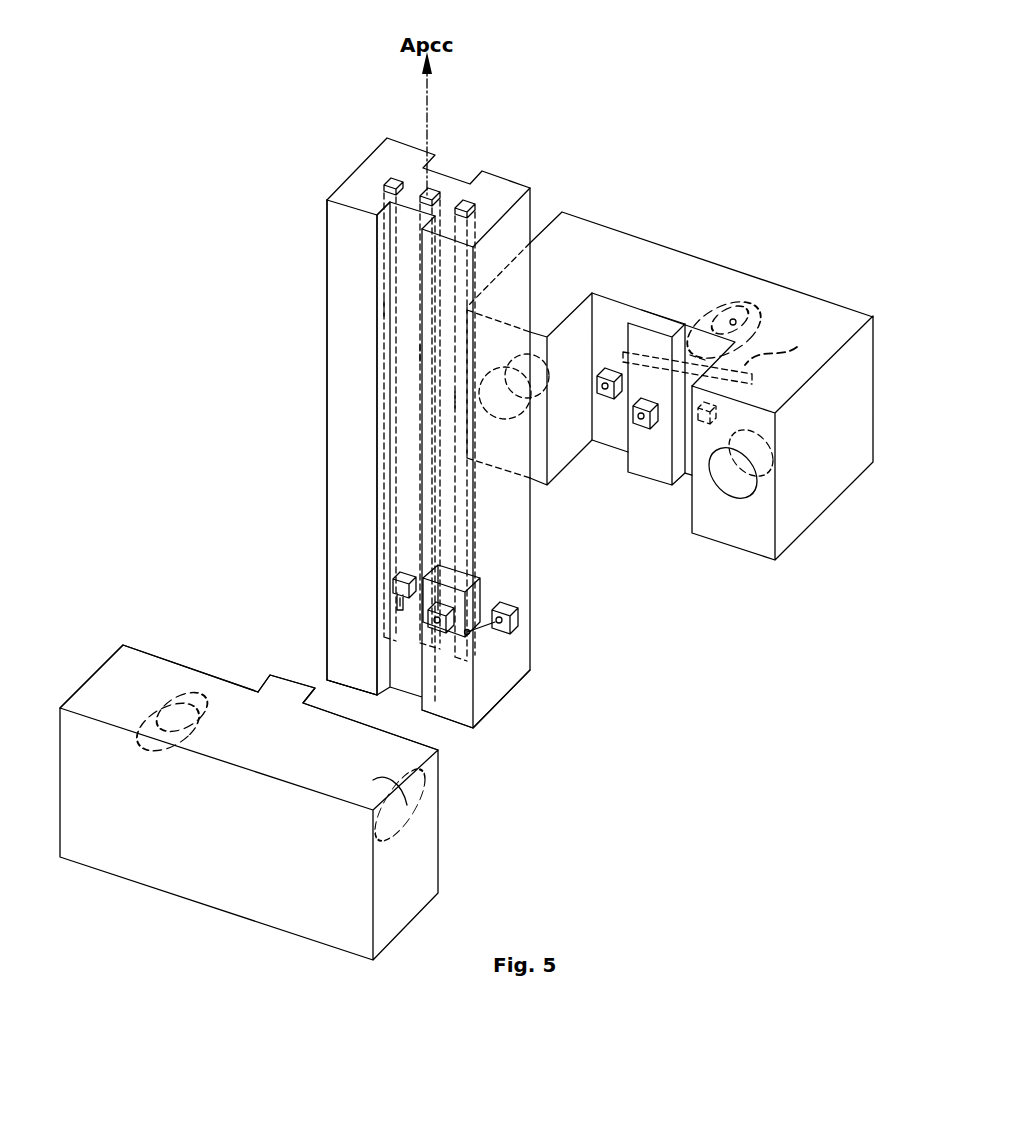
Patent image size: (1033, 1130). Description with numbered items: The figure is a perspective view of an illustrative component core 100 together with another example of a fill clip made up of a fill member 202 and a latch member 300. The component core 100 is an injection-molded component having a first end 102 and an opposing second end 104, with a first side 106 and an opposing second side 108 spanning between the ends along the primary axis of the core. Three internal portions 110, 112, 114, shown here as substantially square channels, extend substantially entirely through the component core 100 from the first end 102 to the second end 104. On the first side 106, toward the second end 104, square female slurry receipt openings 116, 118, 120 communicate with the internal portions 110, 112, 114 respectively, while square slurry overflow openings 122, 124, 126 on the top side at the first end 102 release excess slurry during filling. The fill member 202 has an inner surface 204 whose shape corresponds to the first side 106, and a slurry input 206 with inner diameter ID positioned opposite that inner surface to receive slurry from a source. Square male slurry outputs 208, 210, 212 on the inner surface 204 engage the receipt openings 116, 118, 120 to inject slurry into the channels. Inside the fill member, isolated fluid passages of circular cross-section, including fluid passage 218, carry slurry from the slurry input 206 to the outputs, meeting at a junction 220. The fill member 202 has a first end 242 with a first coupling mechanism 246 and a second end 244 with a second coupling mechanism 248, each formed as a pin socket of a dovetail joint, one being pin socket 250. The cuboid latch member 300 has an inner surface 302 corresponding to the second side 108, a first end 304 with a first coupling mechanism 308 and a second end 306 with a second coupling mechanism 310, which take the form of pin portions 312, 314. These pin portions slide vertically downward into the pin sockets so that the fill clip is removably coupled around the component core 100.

The component core 100 is at (548, 628).
The first end 102 is at (327, 283).
The second end 104 is at (327, 645).
The first side 106 is at (514, 170).
The second side 108 is at (345, 490).
The internal portion 110 is at (390, 308).
The internal portion 112 is at (428, 357).
The internal portion 114 is at (457, 402).
The slurry receipt opening 116 is at (400, 572).
The slurry receipt opening 118 is at (440, 602).
The slurry receipt opening 120 is at (516, 610).
The slurry overflow opening 122 is at (392, 180).
The slurry overflow opening 124 is at (430, 192).
The slurry overflow opening 126 is at (463, 203).
The fill member 202 is at (752, 185).
The inner surface 204 is at (563, 343).
The slurry input 206 is at (762, 305).
The slurry output 208 is at (605, 367).
The slurry output 210 is at (647, 397).
The slurry output 212 is at (705, 415).
The fluid passage 218 is at (797, 347).
The junction 220 is at (737, 297).
The first end 242 is at (545, 305).
The second end 244 is at (830, 350).
The first coupling mechanism 246 is at (567, 493).
The second coupling mechanism 248 is at (733, 478).
The pin socket 250 is at (505, 403).
The latch member 300 is at (196, 925).
The inner surface 302 is at (200, 645).
The first end 304 is at (162, 655).
The second end 306 is at (407, 737).
The first coupling mechanism 308 is at (115, 913).
The second coupling mechanism 310 is at (455, 829).
The pin portion 312 is at (157, 752).
The pin portion 314 is at (433, 833).